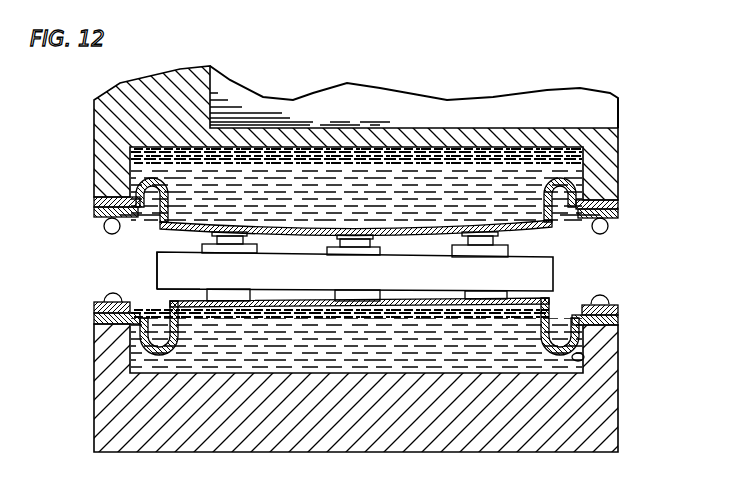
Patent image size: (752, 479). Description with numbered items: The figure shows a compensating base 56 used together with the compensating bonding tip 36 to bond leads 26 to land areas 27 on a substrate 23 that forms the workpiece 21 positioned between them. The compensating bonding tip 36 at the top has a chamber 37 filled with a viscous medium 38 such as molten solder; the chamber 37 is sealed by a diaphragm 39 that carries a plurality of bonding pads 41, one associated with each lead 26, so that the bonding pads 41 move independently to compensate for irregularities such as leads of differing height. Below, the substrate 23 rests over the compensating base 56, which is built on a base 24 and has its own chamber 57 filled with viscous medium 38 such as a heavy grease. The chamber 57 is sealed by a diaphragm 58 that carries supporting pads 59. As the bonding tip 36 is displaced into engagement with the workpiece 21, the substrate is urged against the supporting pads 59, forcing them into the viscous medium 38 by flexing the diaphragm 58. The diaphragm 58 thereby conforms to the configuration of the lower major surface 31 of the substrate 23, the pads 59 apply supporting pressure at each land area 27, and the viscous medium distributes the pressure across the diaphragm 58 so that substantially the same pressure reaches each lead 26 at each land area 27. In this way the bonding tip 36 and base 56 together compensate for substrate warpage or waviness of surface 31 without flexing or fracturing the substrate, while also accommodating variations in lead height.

The workpiece 21 is at (556, 259).
The substrate 23 is at (160, 268).
The base 24 is at (612, 429).
The leads 26 is at (352, 246).
The land areas 27 is at (378, 252).
The major surface of the substrate 31 is at (157, 293).
The compensating bonding tip 36 is at (619, 94).
The chamber 37 is at (577, 164).
The viscous medium 38 is at (488, 148).
The diaphragm 39 is at (424, 228).
The bonding pads 41 is at (330, 238).
The compensating base 56 is at (652, 339).
The chamber 57 is at (584, 357).
The diaphragm 58 is at (550, 310).
The supporting pads 59 is at (230, 292).